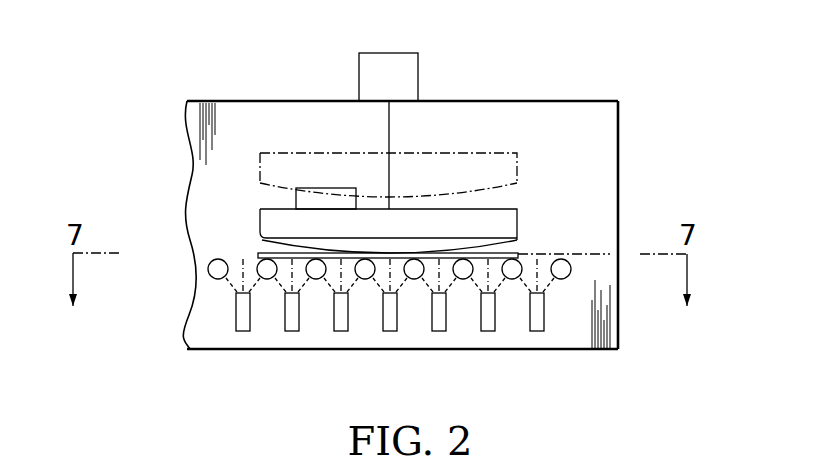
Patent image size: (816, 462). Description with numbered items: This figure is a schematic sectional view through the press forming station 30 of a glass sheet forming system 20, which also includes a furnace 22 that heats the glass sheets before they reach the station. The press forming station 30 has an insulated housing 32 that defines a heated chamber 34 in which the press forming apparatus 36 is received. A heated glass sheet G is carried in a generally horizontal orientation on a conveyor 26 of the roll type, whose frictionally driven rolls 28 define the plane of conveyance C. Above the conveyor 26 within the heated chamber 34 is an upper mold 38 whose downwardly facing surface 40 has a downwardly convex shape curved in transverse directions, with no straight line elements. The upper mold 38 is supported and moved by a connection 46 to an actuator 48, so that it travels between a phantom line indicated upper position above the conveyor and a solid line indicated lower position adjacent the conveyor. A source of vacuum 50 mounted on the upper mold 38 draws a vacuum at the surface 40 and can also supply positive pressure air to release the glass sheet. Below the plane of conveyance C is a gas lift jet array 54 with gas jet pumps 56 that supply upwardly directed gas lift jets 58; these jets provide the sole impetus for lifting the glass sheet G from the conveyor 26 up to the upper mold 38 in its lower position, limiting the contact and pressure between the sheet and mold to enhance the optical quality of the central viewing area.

The glass sheet forming system 20 is at (215, 66).
The furnace 22 is at (196, 97).
The conveyor 26 is at (195, 269).
The rolls 28 is at (267, 280).
The press forming station 30 is at (558, 96).
The insulated housing 32 is at (600, 101).
The heated chamber 34 is at (492, 113).
The press forming apparatus 36 is at (577, 134).
The upper mold 38 is at (507, 209).
The downwardly facing surface 40 is at (403, 268).
The connection 46 is at (389, 133).
The actuator 48 is at (359, 80).
The source of vacuum 50 is at (327, 188).
The gas lift jet array 54 is at (566, 310).
The gas jet pumps 56 is at (397, 312).
The gas lift jets 58 is at (300, 283).
The glass sheet G is at (255, 255).
The plane of conveyance C is at (600, 254).